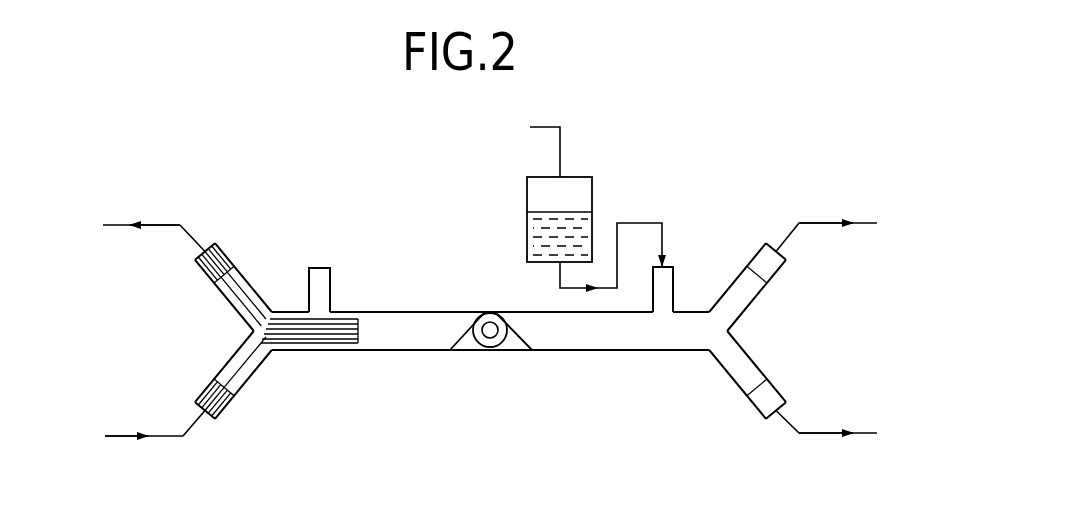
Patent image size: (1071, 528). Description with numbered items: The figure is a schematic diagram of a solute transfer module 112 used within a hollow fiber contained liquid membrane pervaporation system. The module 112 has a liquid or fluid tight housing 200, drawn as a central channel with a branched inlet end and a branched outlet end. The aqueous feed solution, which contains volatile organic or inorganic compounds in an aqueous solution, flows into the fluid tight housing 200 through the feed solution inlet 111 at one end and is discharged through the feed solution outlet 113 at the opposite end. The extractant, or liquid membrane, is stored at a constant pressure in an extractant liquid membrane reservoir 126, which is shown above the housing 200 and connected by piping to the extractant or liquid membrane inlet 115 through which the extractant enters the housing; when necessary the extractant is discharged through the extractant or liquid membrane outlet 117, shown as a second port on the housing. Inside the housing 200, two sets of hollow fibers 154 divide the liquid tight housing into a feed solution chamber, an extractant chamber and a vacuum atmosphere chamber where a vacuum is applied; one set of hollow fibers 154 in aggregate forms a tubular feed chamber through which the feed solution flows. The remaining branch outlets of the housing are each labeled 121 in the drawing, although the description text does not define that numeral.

The feed solution inlet 111 is at (145, 441).
The module 112 is at (764, 196).
The feed solution outlet 113 is at (835, 418).
The extractant or liquid membrane inlet 115 is at (668, 265).
The extractant or liquid membrane outlet 117 is at (316, 268).
The outlet 121 is at (494, 222).
The extractant liquid membrane reservoir 126 is at (533, 193).
The hollow fibers 154 is at (482, 356).
The fluid tight housing 200 is at (357, 350).